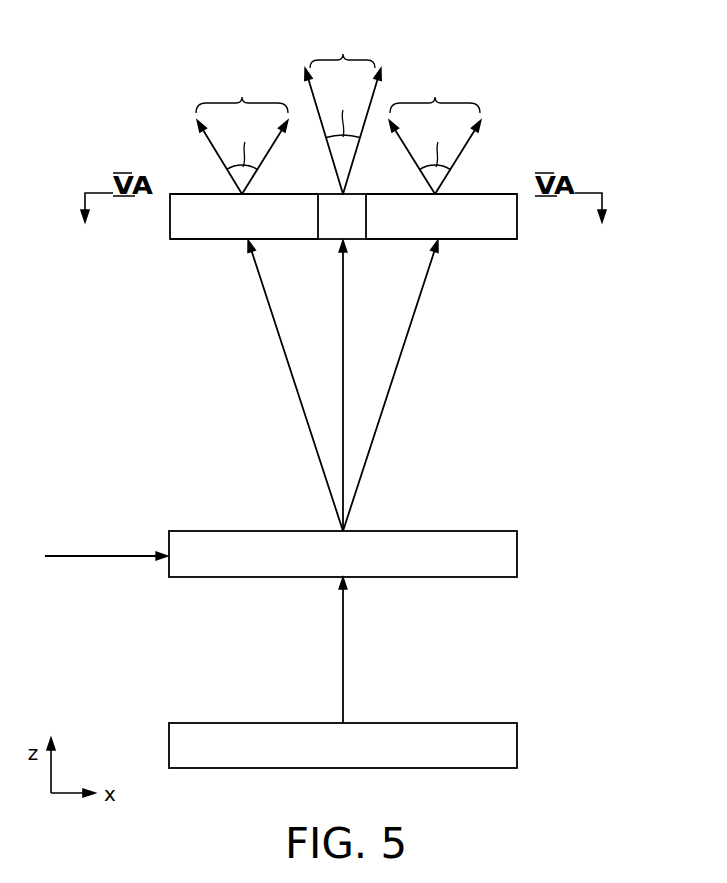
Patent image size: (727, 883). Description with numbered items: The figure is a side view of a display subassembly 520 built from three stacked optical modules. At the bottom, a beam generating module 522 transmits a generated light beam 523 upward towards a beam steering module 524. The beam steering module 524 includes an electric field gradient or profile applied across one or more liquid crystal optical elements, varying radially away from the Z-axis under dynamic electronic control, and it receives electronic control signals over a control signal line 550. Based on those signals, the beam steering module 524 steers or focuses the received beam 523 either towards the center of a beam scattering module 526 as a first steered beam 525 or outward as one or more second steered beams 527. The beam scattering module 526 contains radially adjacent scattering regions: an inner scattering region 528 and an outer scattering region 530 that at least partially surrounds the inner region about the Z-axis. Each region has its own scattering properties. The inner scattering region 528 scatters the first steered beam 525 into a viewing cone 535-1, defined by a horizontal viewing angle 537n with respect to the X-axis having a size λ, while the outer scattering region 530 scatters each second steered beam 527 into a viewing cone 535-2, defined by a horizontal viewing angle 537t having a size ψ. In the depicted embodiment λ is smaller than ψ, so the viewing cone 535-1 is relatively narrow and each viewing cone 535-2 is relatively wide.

The display subassembly 520 is at (178, 817).
The beam generating module 522 is at (540, 746).
The generated light beam 523 is at (345, 650).
The beam steering module 524 is at (540, 551).
The first steered beam 525 is at (346, 394).
The beam scattering module 526 is at (541, 227).
The second steered beams 527 is at (296, 393).
The inner scattering region 528 is at (323, 233).
The outer scattering region 530 is at (223, 233).
The viewing cone of inner scattering region 535-1 is at (343, 60).
The viewing cone of outer scattering region 535-2 is at (242, 101).
The horizontal viewing angle of inner scattering region 537n is at (347, 140).
The horizontal viewing angle of outer scattering region 537t is at (226, 171).
The control signal line 550 is at (84, 556).